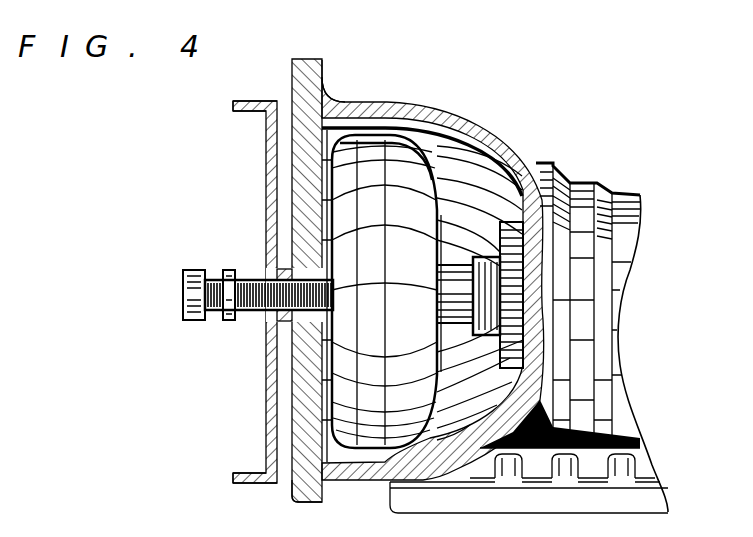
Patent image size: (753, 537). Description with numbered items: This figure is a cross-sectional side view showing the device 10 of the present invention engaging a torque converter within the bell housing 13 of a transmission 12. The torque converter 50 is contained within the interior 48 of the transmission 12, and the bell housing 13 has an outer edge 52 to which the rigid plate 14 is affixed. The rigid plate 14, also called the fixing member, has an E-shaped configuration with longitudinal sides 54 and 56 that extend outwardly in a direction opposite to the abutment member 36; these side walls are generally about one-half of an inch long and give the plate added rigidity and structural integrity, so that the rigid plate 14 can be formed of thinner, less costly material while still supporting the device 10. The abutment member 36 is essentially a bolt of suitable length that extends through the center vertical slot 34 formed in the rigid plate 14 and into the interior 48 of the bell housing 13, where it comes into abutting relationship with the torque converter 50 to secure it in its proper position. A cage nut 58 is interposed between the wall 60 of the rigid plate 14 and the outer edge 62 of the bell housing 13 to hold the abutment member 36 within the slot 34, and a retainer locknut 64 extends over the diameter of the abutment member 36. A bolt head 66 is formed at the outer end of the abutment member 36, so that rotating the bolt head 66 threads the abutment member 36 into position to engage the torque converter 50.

The device 10 is at (206, 188).
The transmission 12 is at (578, 175).
The bell housing 13 is at (452, 115).
The rigid plate 14 is at (265, 211).
The center vertical slot 34 is at (265, 316).
The abutment member 36 is at (264, 335).
The interior 48 is at (462, 187).
The torque converter 50 is at (396, 306).
The outer edge 52 is at (323, 80).
The longitudinal side 54 is at (239, 100).
The longitudinal side 56 is at (232, 472).
The cage nut 58 is at (279, 270).
The wall 60 is at (276, 100).
The outer edge 62 is at (289, 488).
The retainer locknut 64 is at (226, 316).
The bolt head 66 is at (183, 293).